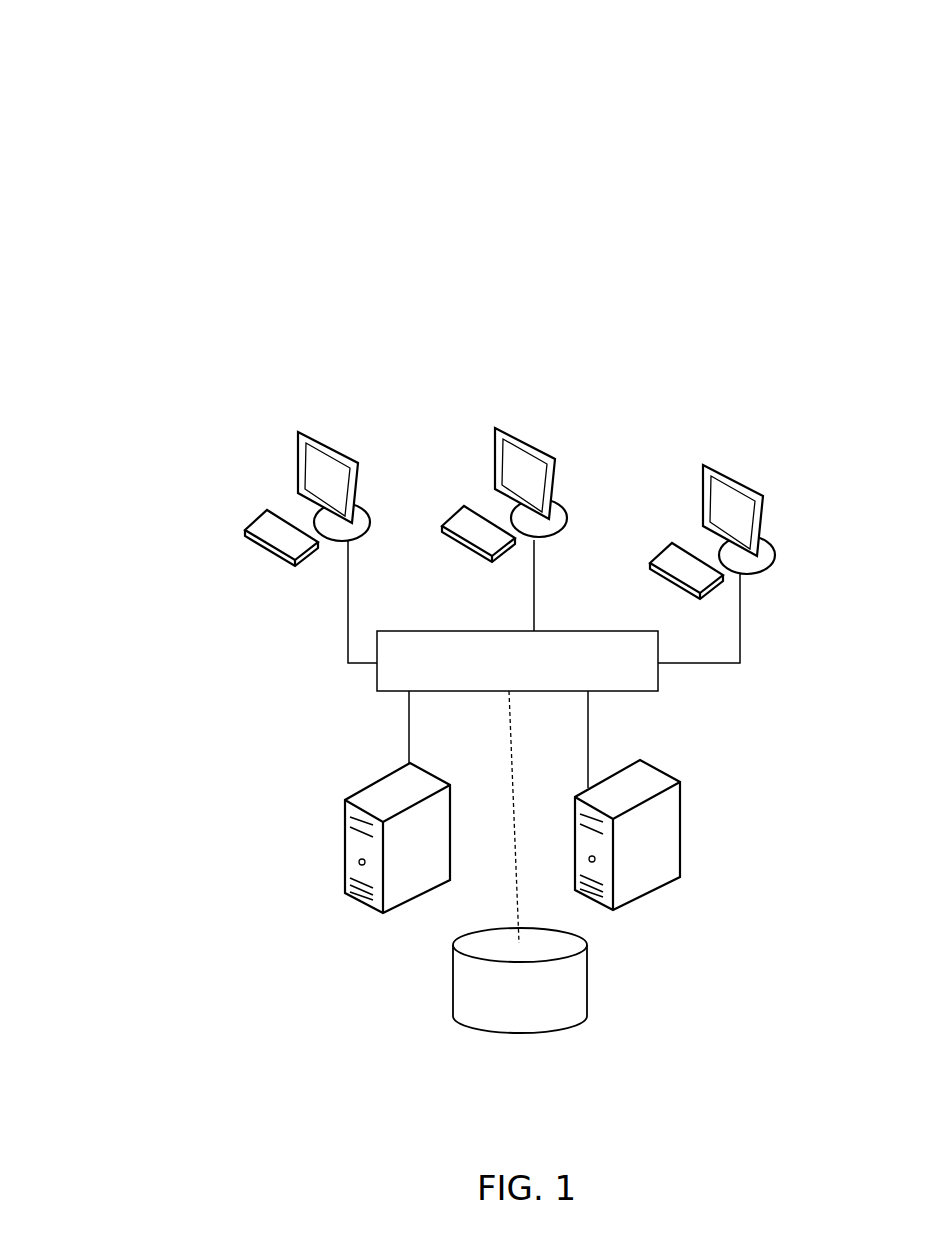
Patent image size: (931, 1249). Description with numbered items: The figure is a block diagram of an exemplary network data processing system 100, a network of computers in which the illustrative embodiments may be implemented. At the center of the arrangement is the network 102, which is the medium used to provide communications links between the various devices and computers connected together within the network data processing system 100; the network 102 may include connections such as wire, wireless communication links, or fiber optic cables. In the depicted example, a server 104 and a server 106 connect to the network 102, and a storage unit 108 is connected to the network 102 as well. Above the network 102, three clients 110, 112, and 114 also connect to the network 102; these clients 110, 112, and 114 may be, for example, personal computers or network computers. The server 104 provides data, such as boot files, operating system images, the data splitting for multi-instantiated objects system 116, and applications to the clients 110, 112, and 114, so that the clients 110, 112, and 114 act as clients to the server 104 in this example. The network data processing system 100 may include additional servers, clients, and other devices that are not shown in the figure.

The network data processing system 100 is at (97, 202).
The network 102 is at (500, 681).
The server 104 is at (682, 813).
The server 106 is at (345, 850).
The storage unit 108 is at (453, 980).
The client 110 is at (322, 432).
The client 112 is at (519, 429).
The client 114 is at (710, 466).
The data splitting for multi-instantiated objects system 116 is at (132, 711).